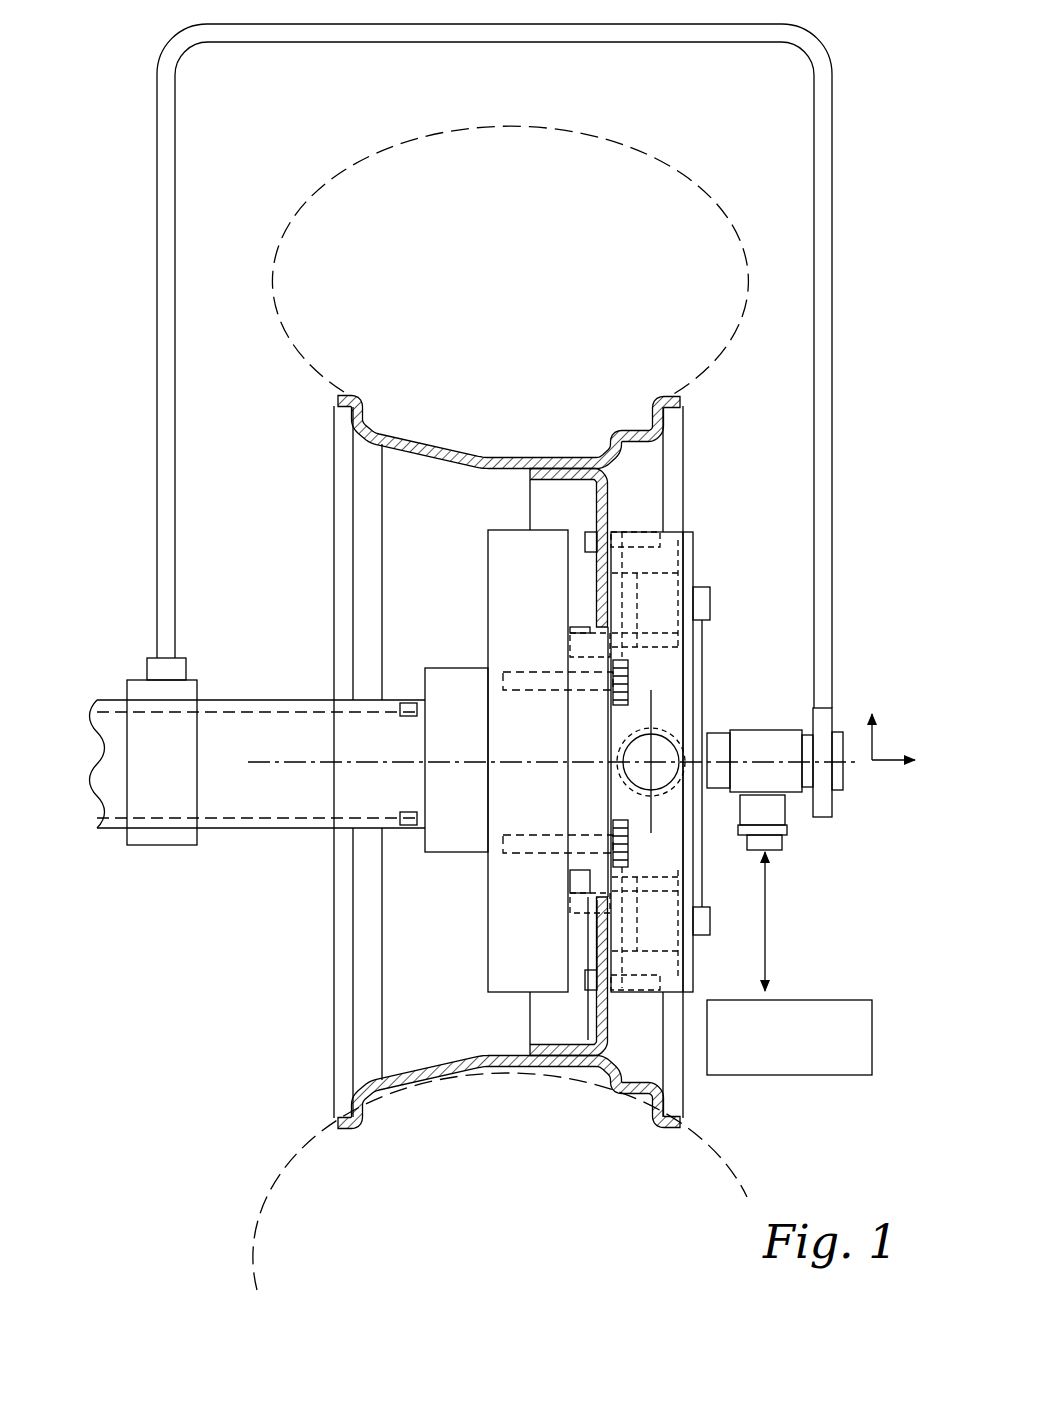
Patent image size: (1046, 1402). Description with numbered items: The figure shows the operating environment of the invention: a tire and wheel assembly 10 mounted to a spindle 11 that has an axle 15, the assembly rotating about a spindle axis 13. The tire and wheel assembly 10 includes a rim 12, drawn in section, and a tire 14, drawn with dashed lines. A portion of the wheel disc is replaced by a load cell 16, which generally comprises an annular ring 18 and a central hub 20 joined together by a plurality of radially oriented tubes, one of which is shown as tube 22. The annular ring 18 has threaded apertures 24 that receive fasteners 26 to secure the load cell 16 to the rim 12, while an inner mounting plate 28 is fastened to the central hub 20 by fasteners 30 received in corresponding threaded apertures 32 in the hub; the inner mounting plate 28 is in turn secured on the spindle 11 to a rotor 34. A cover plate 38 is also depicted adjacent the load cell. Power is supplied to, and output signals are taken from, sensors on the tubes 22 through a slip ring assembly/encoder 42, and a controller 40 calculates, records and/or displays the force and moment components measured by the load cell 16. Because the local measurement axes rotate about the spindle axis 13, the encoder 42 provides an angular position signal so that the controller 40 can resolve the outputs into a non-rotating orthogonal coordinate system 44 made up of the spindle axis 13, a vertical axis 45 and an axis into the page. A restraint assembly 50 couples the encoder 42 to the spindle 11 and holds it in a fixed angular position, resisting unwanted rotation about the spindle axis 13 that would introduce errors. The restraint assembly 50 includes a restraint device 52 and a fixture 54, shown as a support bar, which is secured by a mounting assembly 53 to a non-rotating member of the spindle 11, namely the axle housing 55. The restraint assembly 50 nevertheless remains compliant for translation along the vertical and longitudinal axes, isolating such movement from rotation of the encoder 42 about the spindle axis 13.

The tire and wheel assembly 10 is at (268, 178).
The spindle 11 is at (257, 598).
The rim 12 is at (658, 389).
The spindle axis 13 is at (292, 757).
The tire 14 is at (608, 144).
The axle 15 is at (282, 712).
The load cell 16 is at (725, 552).
The annular ring 18 is at (694, 548).
The central hub 20 is at (686, 664).
The radially oriented tube 22 is at (666, 730).
The threaded apertures 24 is at (637, 533).
The fasteners 26 is at (593, 530).
The inner mounting plate 28 is at (588, 897).
The fasteners 30 is at (583, 627).
The threaded apertures 32 is at (633, 623).
The rotor 34 is at (488, 613).
The cover plate 38 is at (702, 683).
The controller 40 is at (808, 1077).
The slip ring assembly/encoder 42 is at (771, 735).
The non-rotating orthogonal coordinate system 44 is at (913, 742).
The axis 45 is at (877, 733).
The restraint assembly 50 is at (884, 545).
The restraint device 52 is at (823, 817).
The mounting assembly 53 is at (145, 650).
The fixture 54 is at (504, 26).
The axle housing 55 is at (112, 698).